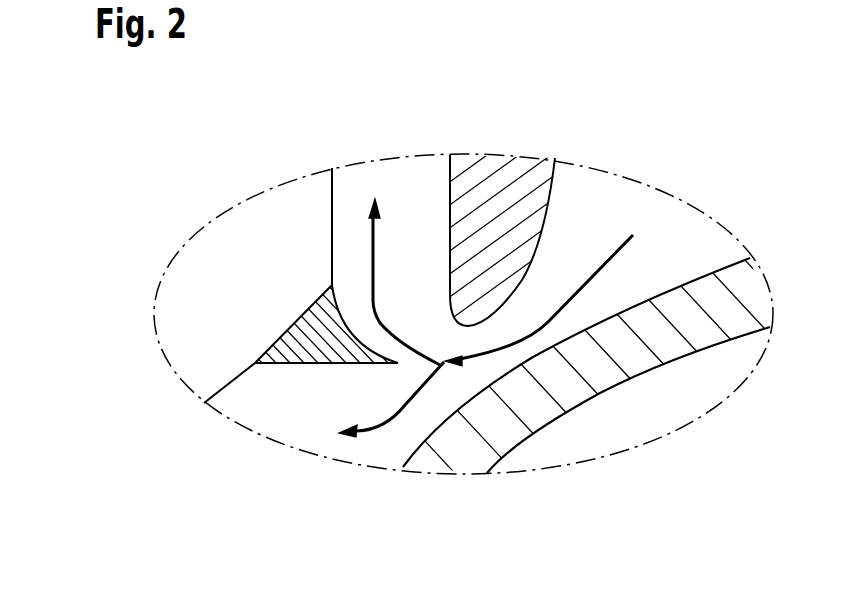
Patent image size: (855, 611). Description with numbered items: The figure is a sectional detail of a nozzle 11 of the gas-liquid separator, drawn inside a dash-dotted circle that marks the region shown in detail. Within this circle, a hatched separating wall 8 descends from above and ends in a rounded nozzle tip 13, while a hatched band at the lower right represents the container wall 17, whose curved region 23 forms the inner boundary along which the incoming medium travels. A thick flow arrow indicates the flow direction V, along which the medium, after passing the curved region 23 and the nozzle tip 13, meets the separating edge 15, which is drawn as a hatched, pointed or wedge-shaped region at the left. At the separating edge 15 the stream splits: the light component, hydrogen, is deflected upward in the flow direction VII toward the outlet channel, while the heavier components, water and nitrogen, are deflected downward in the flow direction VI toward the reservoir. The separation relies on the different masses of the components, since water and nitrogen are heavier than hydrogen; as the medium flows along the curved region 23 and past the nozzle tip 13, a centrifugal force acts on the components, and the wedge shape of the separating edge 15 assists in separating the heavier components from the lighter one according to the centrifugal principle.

The nozzle 11 is at (232, 185).
The separating wall 8 is at (527, 175).
The nozzle tip 13 is at (468, 311).
The separating edge 15 is at (310, 337).
The container wall 17 is at (640, 357).
The curved region 23 is at (632, 317).
The flow direction VII is at (372, 240).
The flow direction V is at (613, 252).
The flow direction VI is at (372, 428).